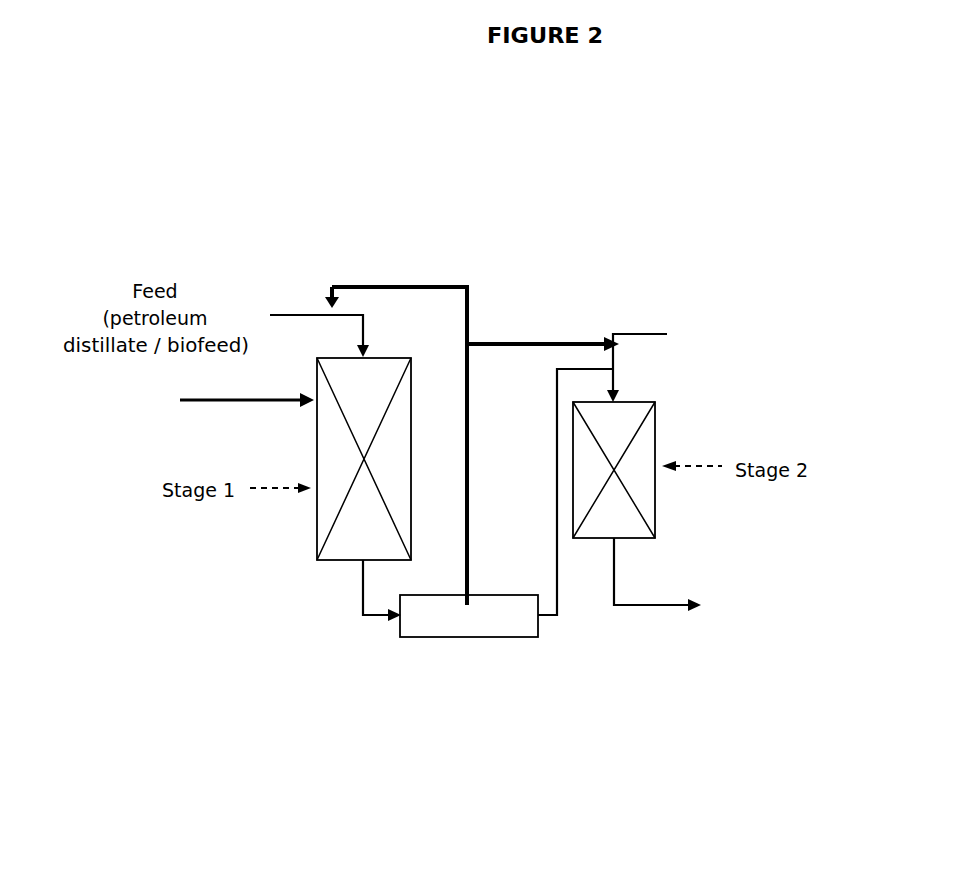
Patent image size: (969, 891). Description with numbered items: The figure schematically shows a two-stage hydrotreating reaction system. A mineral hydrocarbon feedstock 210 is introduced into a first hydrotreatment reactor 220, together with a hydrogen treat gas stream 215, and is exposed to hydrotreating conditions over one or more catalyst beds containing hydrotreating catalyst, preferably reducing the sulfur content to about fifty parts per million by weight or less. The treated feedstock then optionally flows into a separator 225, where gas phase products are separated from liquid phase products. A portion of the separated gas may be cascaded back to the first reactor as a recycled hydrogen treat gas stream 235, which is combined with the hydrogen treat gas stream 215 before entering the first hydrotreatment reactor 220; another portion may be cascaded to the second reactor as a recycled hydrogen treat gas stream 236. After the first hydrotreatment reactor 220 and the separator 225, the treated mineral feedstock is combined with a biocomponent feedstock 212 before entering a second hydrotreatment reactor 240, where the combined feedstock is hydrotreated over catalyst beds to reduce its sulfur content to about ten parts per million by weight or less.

The mineral hydrocarbon feedstock 210 is at (200, 418).
The biocomponent feedstock 212 is at (652, 318).
The hydrogen treat gas stream 215 is at (326, 297).
The first hydrotreatment reactor 220 is at (295, 530).
The separator 225 is at (442, 653).
The recycled hydrogen treat gas stream 235 is at (382, 263).
The recycled hydrogen treat gas stream 236 is at (523, 327).
The second hydrotreatment reactor 240 is at (670, 430).